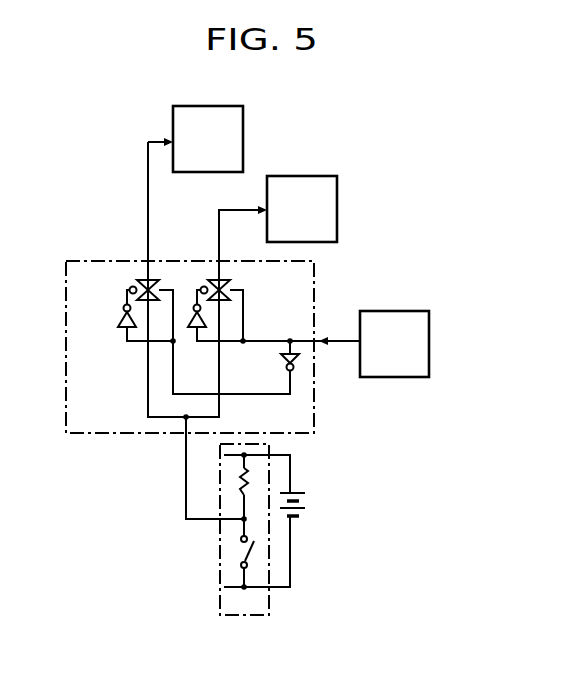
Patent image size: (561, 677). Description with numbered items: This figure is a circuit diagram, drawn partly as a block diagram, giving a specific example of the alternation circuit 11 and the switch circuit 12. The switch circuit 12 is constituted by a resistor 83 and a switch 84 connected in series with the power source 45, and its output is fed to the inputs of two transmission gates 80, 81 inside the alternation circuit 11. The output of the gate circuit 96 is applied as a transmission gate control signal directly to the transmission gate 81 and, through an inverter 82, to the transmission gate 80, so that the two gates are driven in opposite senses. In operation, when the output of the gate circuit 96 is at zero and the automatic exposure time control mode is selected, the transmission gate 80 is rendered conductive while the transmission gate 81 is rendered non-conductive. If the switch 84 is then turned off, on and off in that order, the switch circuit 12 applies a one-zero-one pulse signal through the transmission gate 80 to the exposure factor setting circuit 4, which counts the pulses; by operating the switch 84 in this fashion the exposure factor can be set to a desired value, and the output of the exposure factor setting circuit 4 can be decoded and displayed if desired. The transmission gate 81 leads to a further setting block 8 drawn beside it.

The exposure factor setting circuit 4 is at (243, 128).
The manual exposure setting circuit 8 is at (318, 176).
The alternation circuit 11 is at (112, 259).
The switch circuit 12 is at (269, 600).
The power source 45 is at (305, 503).
The transmission gate 80 is at (156, 280).
The transmission gate 81 is at (230, 288).
The inverter 82 is at (282, 362).
The resistor 83 is at (240, 478).
The switch 84 is at (240, 556).
The gate circuit 96 is at (393, 311).